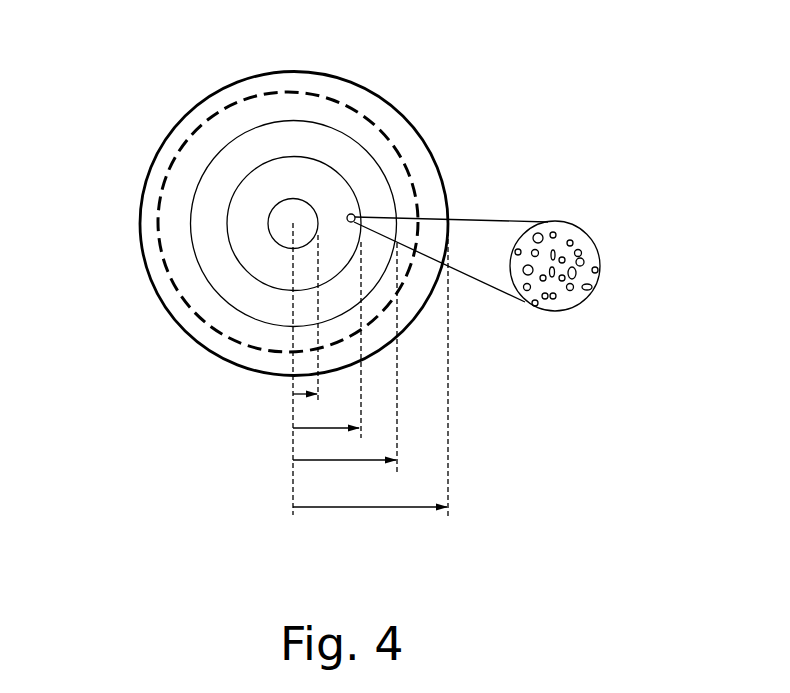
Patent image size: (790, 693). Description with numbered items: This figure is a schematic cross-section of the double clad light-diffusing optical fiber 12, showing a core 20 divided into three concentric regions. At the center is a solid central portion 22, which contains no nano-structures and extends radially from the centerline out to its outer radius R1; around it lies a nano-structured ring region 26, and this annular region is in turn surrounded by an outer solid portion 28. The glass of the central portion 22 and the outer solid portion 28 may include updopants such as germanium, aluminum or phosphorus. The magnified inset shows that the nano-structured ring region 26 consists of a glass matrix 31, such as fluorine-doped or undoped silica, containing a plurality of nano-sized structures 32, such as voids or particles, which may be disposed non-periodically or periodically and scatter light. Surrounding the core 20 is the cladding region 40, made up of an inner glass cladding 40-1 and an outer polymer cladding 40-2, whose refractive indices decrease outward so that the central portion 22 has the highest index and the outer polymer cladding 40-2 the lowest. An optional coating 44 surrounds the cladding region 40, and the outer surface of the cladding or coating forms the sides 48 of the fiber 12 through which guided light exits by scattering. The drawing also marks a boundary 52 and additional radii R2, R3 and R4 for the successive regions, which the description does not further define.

The optical fiber 12 is at (158, 101).
The coating 44 is at (367, 80).
The sides 48 is at (141, 182).
The cladding region 40 is at (380, 120).
The inner glass cladding 40-1 is at (187, 272).
The outer polymer cladding 40-2 is at (202, 330).
The interface 52 is at (408, 122).
The core 20 is at (540, 100).
The outer solid portion 28 is at (340, 153).
The nano-structured ring region 26 is at (335, 182).
The central portion 22 is at (303, 218).
The glass matrix 31 is at (568, 233).
The nano-sized structures 32 is at (545, 299).
The outer radius of central core region R1 is at (293, 395).
The radius R2 is at (296, 428).
The radius R3 is at (320, 460).
The radius R4 is at (370, 507).